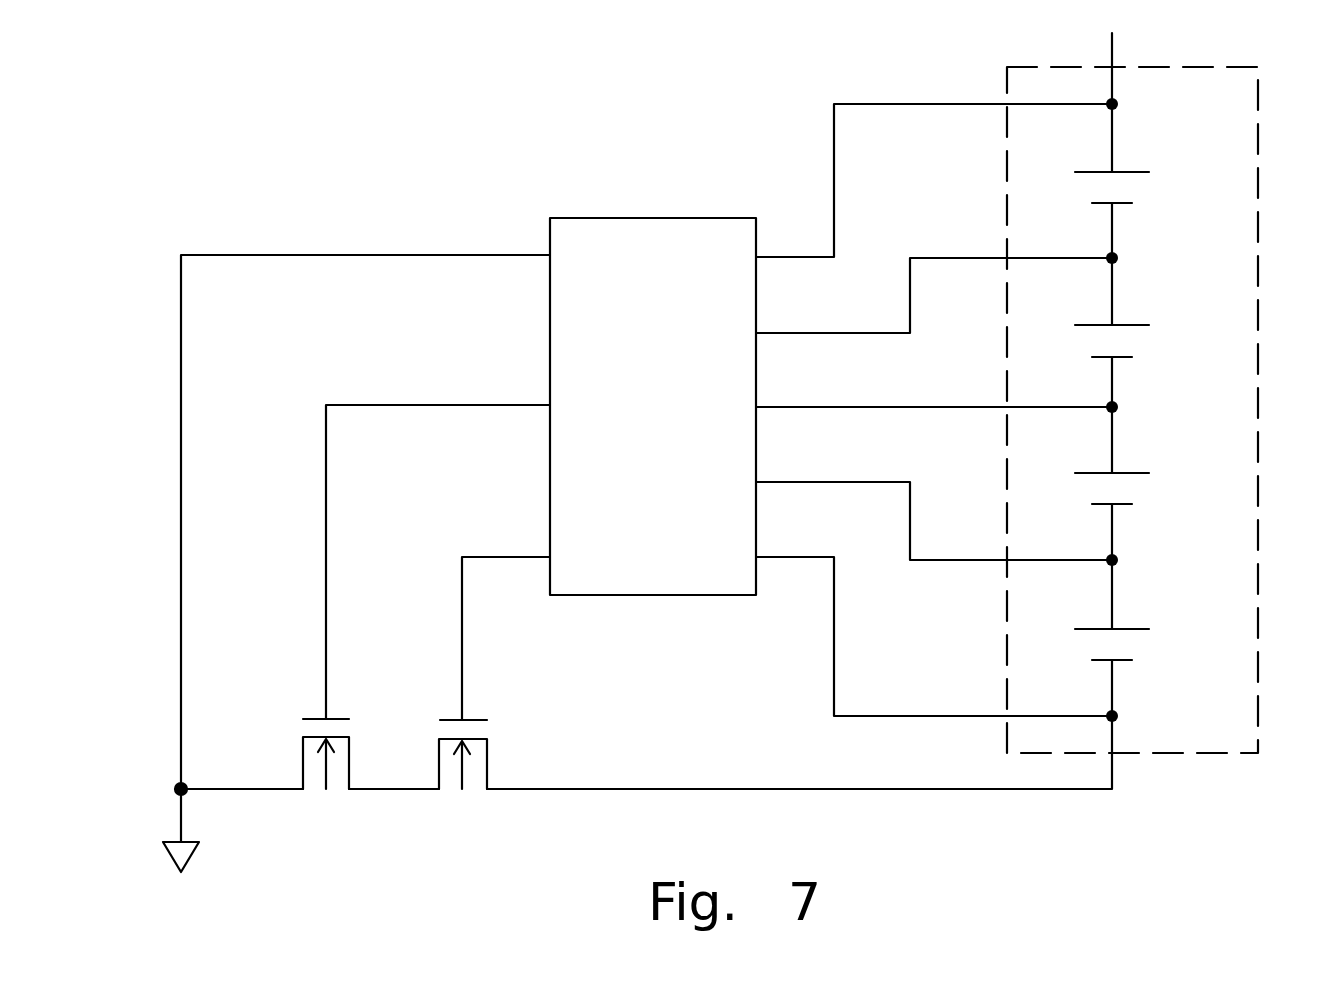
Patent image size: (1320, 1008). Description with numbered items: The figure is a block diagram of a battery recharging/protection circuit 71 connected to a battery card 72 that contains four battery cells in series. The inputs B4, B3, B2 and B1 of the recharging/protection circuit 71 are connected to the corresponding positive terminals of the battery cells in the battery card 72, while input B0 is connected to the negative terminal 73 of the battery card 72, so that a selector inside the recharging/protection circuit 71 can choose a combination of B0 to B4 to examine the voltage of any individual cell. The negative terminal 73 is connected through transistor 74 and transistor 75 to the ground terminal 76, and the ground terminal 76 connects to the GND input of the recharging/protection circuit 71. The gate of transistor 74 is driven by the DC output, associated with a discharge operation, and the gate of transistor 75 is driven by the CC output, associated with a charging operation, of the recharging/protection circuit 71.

The battery recharging/protection circuit 71 is at (637, 218).
The battery card 72 is at (1258, 500).
The negative terminal 73 is at (720, 789).
The transistor 74 is at (487, 772).
The transistor 75 is at (349, 780).
The ground terminal 76 is at (181, 789).